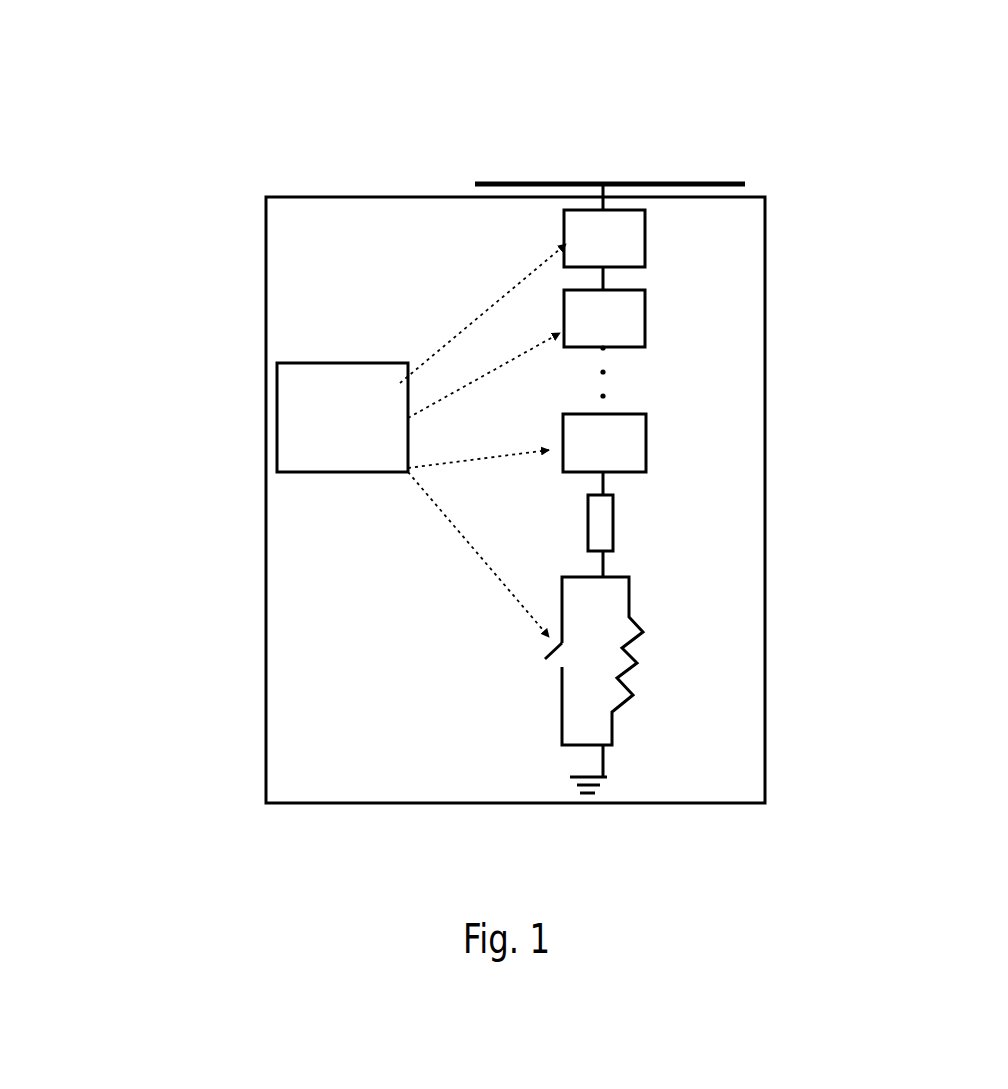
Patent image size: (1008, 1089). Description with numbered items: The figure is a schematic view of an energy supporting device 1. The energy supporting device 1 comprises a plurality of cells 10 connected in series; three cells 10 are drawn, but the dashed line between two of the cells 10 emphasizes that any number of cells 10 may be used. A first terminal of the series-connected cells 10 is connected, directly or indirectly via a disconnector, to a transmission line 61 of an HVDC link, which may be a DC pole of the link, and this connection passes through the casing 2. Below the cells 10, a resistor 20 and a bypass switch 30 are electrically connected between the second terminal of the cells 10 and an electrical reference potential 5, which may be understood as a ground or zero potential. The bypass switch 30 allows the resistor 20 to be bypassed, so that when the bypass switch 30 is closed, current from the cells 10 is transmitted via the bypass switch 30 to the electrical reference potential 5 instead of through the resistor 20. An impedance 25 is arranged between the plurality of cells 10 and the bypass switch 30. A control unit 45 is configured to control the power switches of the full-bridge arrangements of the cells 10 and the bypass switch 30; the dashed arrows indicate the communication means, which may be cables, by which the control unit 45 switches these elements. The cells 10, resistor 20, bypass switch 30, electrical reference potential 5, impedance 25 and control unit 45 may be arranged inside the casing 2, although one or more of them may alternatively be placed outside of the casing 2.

The energy supporting device 1 is at (236, 126).
The casing 2 is at (265, 266).
The electrical reference potential 5 is at (608, 777).
The cells 10 is at (645, 239).
The resistor 20 is at (643, 637).
The impedance 25 is at (613, 523).
The bypass switch 30 is at (520, 647).
The control unit 45 is at (280, 405).
The transmission line 61 is at (633, 149).